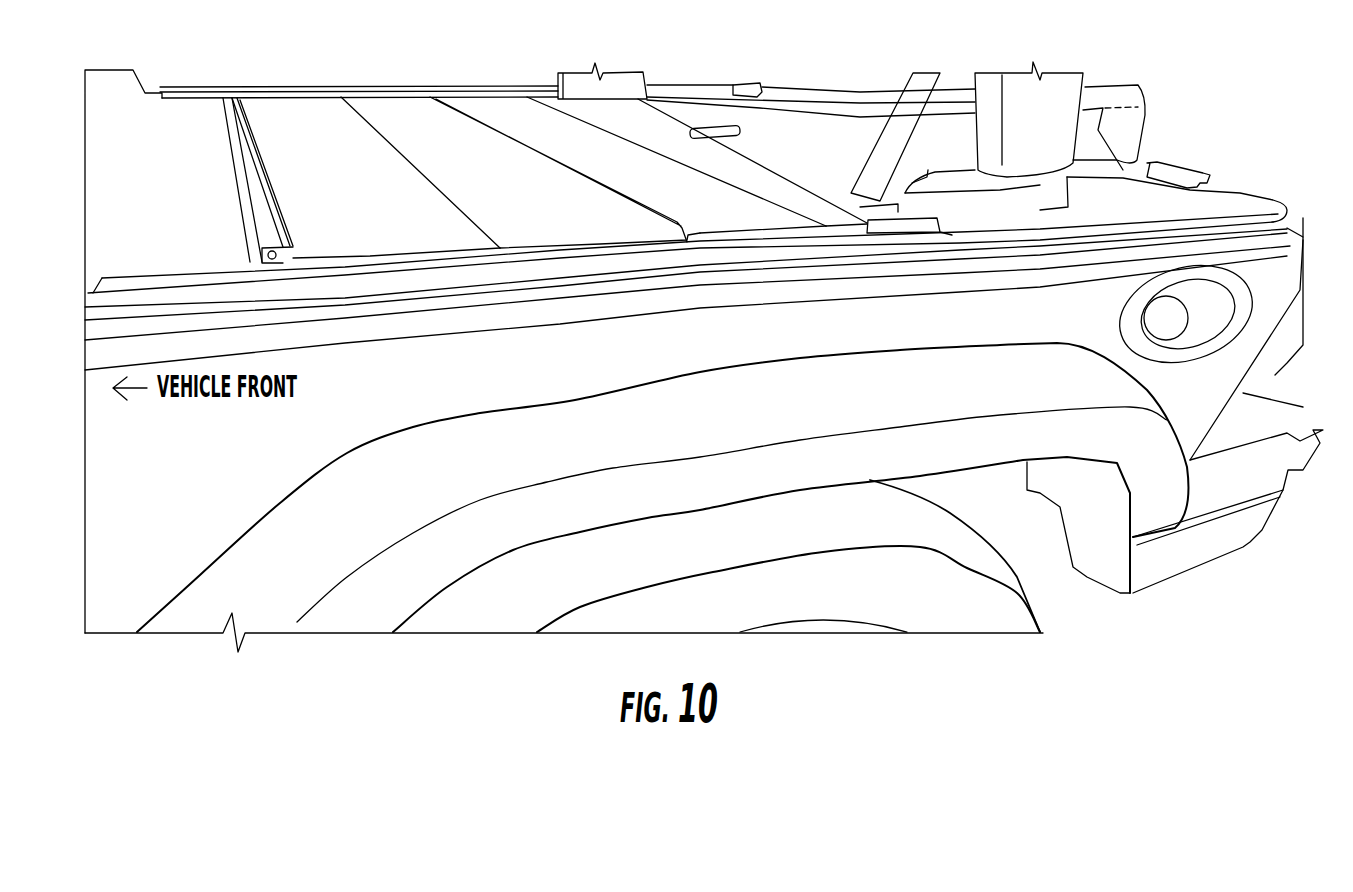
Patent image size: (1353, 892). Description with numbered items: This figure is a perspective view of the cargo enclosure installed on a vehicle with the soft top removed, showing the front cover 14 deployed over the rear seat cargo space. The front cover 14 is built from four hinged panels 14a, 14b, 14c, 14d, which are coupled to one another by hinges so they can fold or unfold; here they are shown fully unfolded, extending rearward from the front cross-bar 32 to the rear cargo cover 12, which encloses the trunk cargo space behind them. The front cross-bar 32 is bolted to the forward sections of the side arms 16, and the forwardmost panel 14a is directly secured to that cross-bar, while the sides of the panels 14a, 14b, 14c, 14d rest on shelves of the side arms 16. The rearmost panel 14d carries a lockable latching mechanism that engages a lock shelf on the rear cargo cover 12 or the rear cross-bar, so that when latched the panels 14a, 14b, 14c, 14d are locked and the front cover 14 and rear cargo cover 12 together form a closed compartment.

The rear cargo cover 12 is at (621, 207).
The front cover 14 is at (545, 250).
The forwardmost panel 14a is at (348, 172).
The hinged panel 14b is at (480, 172).
The hinged panel 14c is at (610, 163).
The rearmost panel 14d is at (772, 168).
The side arms 16 is at (983, 228).
The front cross-bar 32 is at (247, 162).